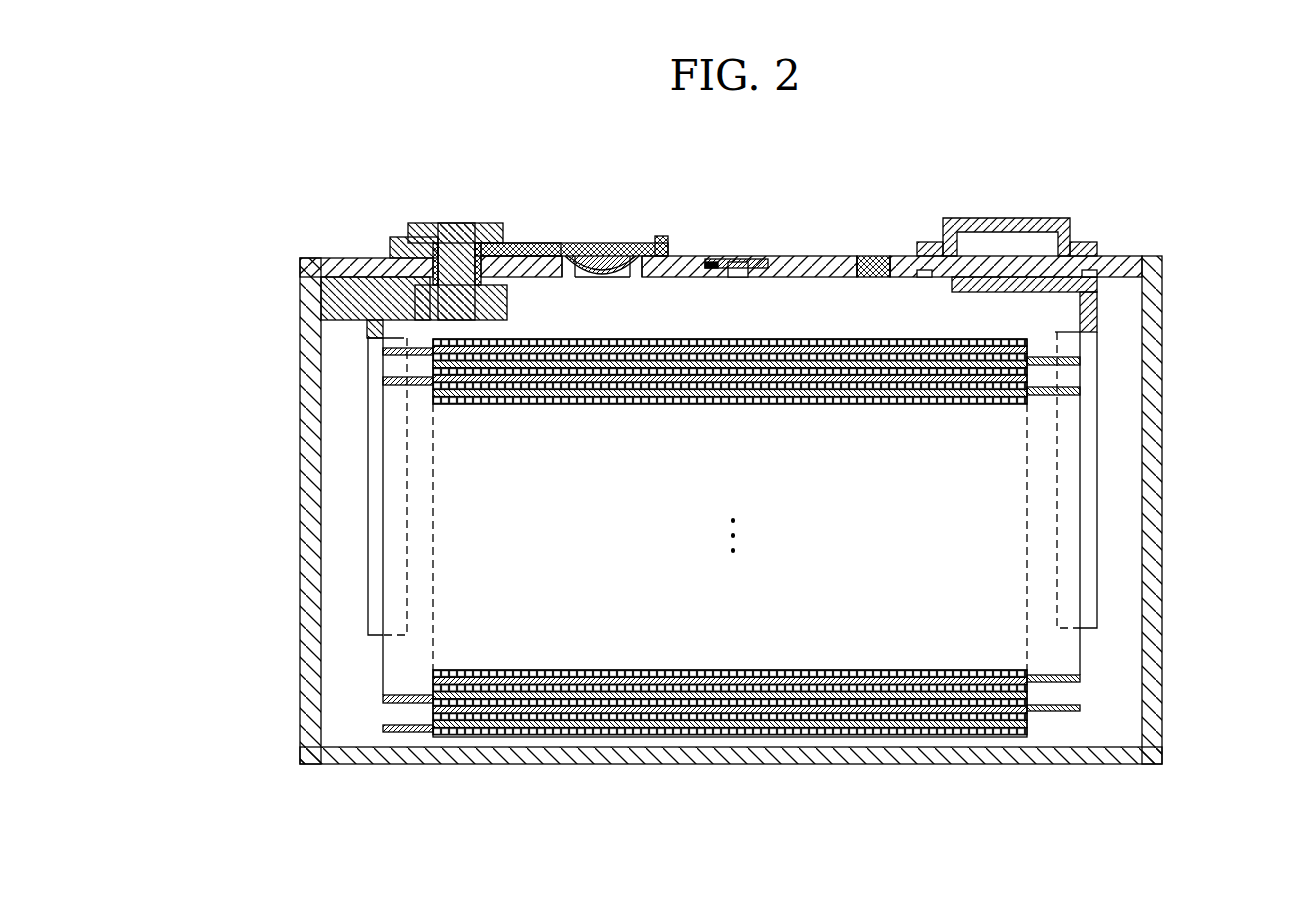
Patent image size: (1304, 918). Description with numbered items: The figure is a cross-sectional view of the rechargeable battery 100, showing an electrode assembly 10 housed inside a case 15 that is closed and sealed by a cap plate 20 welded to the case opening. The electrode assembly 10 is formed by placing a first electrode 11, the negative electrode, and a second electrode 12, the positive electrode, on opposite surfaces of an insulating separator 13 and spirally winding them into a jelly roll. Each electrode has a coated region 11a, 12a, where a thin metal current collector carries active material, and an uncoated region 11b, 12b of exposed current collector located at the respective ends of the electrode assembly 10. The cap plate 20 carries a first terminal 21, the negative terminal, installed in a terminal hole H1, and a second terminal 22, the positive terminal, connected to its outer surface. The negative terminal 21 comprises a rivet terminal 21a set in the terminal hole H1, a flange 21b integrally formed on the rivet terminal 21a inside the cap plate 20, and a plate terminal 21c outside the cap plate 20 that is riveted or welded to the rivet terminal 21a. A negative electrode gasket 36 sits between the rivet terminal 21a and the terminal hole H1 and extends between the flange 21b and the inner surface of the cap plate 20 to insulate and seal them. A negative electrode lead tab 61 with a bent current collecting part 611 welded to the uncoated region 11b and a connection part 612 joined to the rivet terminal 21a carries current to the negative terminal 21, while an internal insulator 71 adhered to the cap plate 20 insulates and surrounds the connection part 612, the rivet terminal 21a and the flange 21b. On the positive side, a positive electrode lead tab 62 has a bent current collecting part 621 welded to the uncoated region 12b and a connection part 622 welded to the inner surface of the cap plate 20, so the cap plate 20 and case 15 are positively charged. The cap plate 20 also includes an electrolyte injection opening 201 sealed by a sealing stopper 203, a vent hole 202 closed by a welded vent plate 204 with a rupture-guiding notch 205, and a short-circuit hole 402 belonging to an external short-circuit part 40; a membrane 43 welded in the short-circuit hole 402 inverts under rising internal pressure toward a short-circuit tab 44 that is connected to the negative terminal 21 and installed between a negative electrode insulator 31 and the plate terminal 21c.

The rechargeable battery 100 is at (703, 141).
The electrode assembly 10 is at (857, 742).
The first electrode 11 is at (400, 830).
The coated region 11a is at (530, 703).
The uncoated region 11b is at (412, 732).
The second electrode 12 is at (1090, 830).
The coated region 12a is at (957, 713).
The uncoated region 12b is at (1063, 711).
The separator 13 is at (748, 728).
The case 15 is at (1152, 505).
The cap plate 20 is at (808, 257).
The electrolyte injection opening 201 is at (873, 278).
The vent hole 202 is at (740, 272).
The sealing stopper 203 is at (875, 257).
The vent plate 204 is at (752, 258).
The notch 205 is at (712, 259).
The first terminal 21 is at (457, 220).
The rivet terminal 21a is at (458, 322).
The flange 21b is at (522, 243).
The plate terminal 21c is at (483, 230).
The second terminal 22 is at (1000, 216).
The negative electrode insulator 31 is at (654, 243).
The negative electrode gasket 36 is at (432, 272).
The external short-circuit part 40 is at (602, 250).
The short-circuit hole 402 is at (612, 272).
The membrane 43 is at (578, 278).
The short-circuit tab 44 is at (556, 243).
The negative electrode lead tab 61 is at (222, 356).
The current collecting part 611 is at (372, 405).
The connection part 612 is at (345, 320).
The positive electrode lead tab 62 is at (1232, 336).
The current collecting part 621 is at (1090, 400).
The connection part 622 is at (1097, 285).
The internal insulator 71 is at (336, 302).
The terminal hole H1 is at (453, 228).